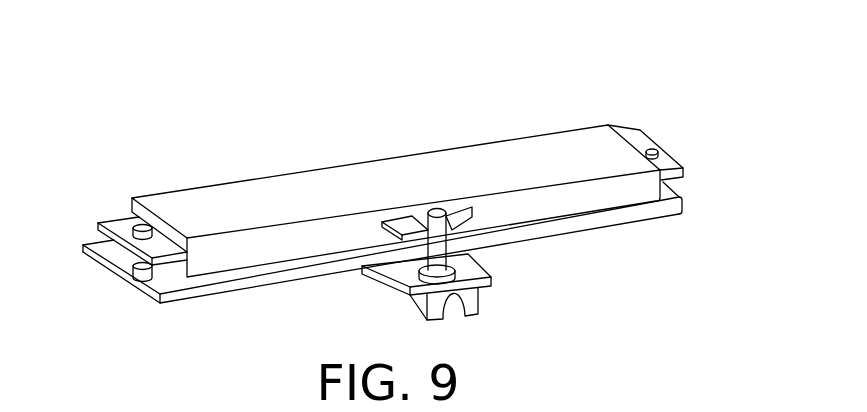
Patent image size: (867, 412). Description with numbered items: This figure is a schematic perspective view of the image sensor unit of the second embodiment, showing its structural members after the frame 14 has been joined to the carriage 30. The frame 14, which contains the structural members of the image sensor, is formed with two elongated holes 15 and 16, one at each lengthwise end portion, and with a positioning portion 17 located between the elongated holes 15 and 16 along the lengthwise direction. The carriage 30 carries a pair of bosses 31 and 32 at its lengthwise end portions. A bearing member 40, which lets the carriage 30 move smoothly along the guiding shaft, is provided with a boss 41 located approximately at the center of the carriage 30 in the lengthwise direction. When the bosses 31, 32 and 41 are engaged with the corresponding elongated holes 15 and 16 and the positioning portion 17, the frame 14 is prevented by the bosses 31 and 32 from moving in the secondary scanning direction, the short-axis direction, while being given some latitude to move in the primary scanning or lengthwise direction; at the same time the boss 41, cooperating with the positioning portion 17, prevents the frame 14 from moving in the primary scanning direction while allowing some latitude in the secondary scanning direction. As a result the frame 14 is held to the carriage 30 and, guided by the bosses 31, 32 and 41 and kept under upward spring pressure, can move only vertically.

The frame 14 is at (213, 197).
The elongated hole 15 is at (128, 246).
The elongated hole 16 is at (684, 161).
The positioning portion 17 is at (400, 218).
The carriage 30 is at (160, 284).
The boss 31 is at (134, 216).
The boss 32 is at (654, 150).
The bearing member 40 is at (478, 300).
The boss 41 is at (437, 207).